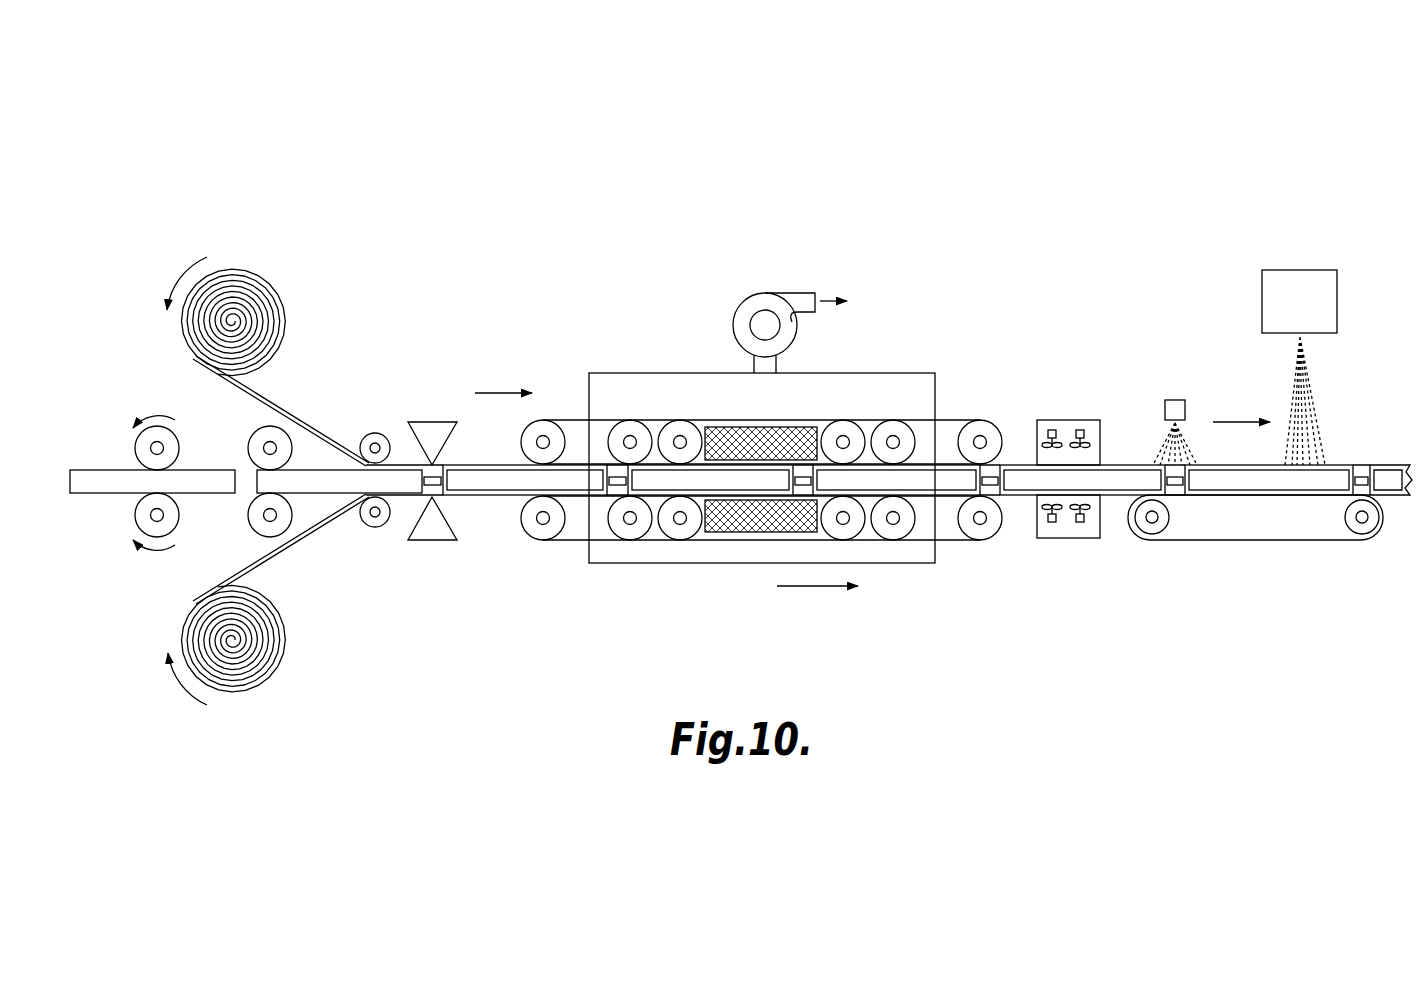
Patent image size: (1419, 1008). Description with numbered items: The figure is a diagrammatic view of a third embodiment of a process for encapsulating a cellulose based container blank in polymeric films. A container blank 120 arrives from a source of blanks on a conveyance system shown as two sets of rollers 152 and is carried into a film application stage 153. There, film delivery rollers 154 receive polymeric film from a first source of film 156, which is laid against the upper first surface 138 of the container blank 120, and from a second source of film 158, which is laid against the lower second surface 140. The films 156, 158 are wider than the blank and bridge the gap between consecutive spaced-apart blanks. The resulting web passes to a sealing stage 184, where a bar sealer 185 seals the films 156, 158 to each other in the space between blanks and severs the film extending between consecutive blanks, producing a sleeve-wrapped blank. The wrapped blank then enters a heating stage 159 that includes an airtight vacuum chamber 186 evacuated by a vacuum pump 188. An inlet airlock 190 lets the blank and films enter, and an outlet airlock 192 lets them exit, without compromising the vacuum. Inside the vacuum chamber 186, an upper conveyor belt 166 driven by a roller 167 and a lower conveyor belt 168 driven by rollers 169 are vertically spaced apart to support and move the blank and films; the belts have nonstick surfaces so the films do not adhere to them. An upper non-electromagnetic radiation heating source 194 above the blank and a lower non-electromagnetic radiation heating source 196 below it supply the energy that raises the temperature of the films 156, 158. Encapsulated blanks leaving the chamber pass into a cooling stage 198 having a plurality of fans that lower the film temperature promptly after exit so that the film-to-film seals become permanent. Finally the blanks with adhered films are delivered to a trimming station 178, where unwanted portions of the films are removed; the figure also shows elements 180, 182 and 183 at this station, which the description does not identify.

The container blank 120 is at (95, 470).
The upper first surface 138 is at (318, 470).
The lower second surface 140 is at (318, 497).
The rollers 152 is at (132, 430).
The film application stage 153 is at (268, 228).
The film delivery rollers 154 is at (377, 433).
The first source of film 156 is at (267, 284).
The second source of film 158 is at (280, 665).
The heating stage 159 is at (670, 322).
The upper conveyor belt 166 is at (727, 427).
The roller 167 is at (667, 427).
The lower conveyor belt 168 is at (708, 535).
The rollers 169 is at (665, 532).
The trimming station 178 is at (1232, 268).
The sprayer 180 is at (1175, 400).
The coating dispenser 182 is at (1307, 270).
The output conveyor 183 is at (1263, 540).
The sealing stage 184 is at (425, 392).
The bar sealer 185 is at (428, 424).
The vacuum chamber 186 is at (853, 372).
The vacuum pump 188 is at (790, 289).
The inlet airlock 190 is at (577, 420).
The outlet airlock 192 is at (945, 420).
The upper non-electromagnetic radiation heating source 194 is at (782, 442).
The lower non-electromagnetic radiation heating source 196 is at (772, 535).
The cooling stage 198 is at (1072, 412).